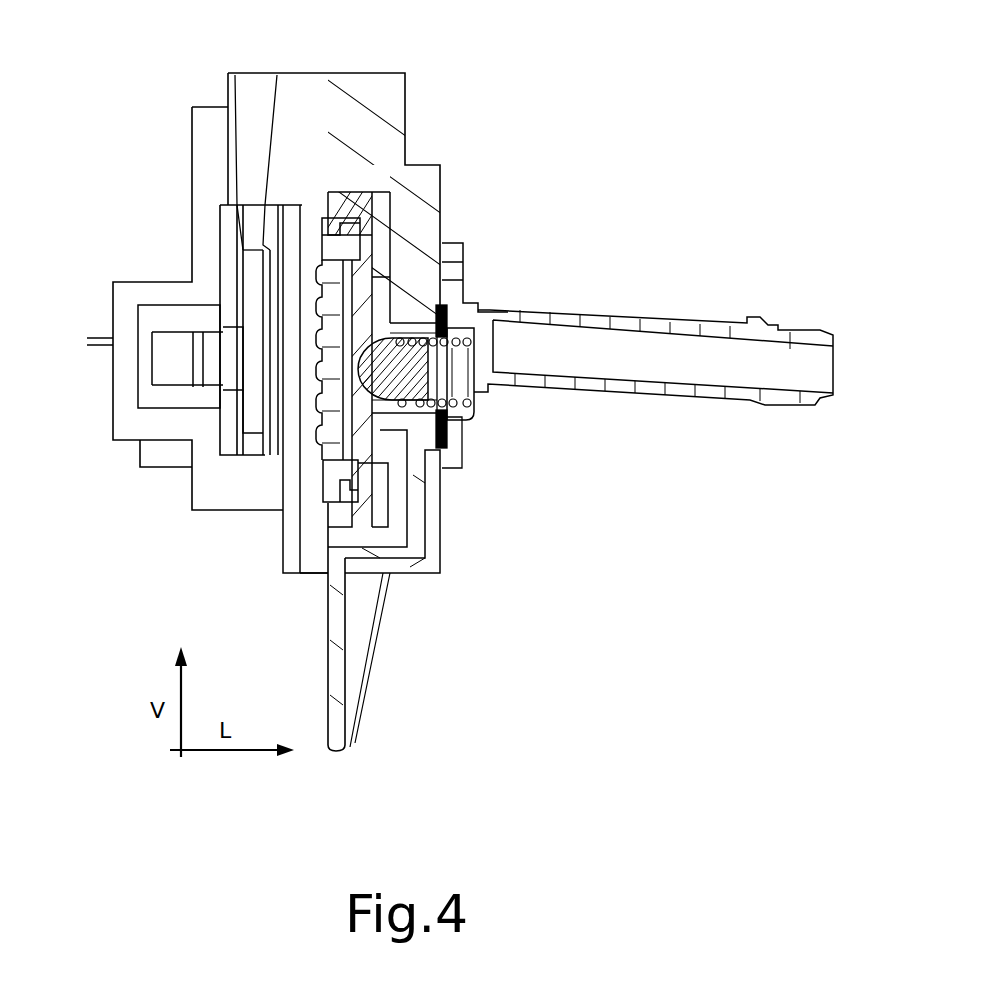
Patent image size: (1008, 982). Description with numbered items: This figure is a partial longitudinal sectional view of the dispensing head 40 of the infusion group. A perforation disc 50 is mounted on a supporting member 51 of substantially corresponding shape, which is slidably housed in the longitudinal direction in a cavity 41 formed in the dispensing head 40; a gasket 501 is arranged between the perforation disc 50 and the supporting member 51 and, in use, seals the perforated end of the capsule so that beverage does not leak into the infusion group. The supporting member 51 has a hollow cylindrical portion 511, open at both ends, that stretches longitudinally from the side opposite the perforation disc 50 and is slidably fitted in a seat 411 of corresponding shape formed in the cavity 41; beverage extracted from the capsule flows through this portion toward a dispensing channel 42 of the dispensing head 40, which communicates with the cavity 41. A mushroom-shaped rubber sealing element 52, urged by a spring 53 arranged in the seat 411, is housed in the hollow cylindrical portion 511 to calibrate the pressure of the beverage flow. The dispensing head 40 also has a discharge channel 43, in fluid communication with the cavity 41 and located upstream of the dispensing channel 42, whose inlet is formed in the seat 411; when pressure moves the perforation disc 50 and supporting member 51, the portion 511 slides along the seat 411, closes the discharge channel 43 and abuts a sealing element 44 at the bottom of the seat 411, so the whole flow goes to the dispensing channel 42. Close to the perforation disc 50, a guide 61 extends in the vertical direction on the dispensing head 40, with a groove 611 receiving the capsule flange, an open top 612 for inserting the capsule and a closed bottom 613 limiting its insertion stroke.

The dispensing head 40 is at (383, 97).
The cavity 41 is at (378, 205).
The seat 411 is at (458, 377).
The dispensing channel 42 is at (631, 352).
The discharge channel 43 is at (397, 537).
The sealing element 44 is at (448, 310).
The perforation disc 50 is at (325, 463).
The gasket 501 is at (337, 490).
The supporting member 51 is at (337, 518).
The hollow cylindrical portion 511 is at (447, 422).
The sealing element 52 is at (402, 370).
The spring 53 is at (470, 412).
The guide 61 is at (200, 188).
The groove 611 is at (255, 285).
The open top 612 is at (255, 230).
The closed bottom 613 is at (255, 424).